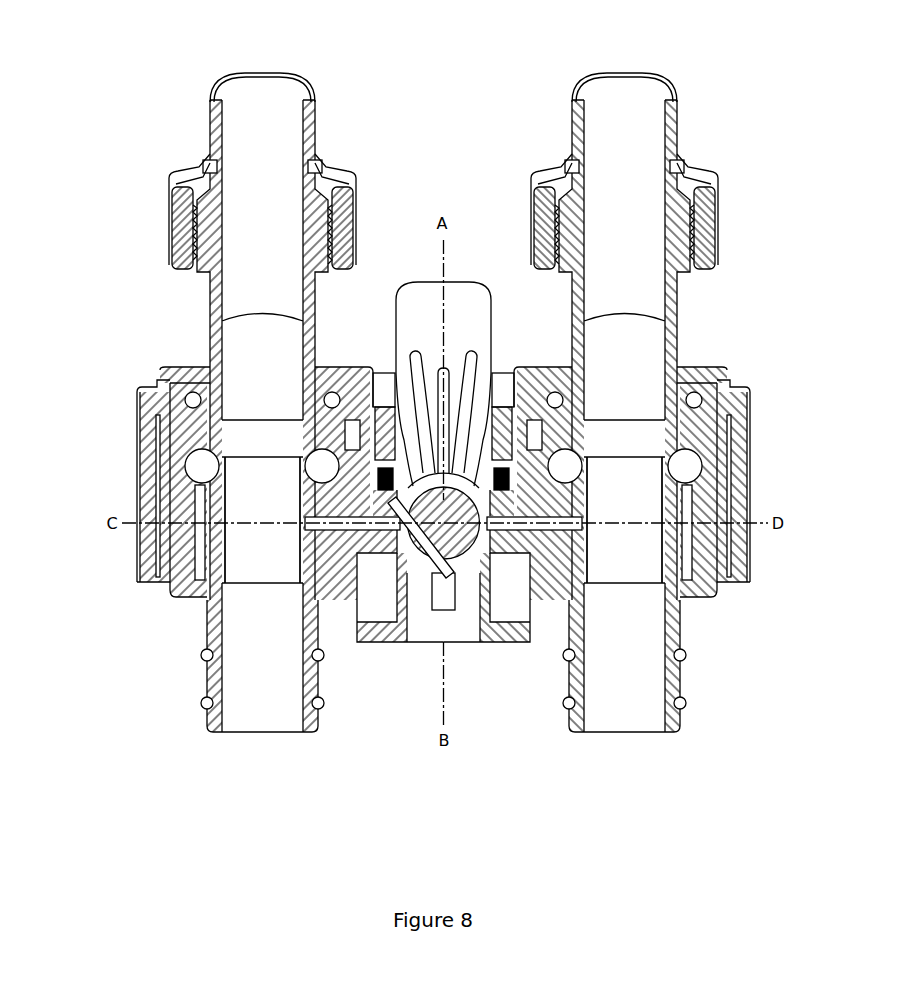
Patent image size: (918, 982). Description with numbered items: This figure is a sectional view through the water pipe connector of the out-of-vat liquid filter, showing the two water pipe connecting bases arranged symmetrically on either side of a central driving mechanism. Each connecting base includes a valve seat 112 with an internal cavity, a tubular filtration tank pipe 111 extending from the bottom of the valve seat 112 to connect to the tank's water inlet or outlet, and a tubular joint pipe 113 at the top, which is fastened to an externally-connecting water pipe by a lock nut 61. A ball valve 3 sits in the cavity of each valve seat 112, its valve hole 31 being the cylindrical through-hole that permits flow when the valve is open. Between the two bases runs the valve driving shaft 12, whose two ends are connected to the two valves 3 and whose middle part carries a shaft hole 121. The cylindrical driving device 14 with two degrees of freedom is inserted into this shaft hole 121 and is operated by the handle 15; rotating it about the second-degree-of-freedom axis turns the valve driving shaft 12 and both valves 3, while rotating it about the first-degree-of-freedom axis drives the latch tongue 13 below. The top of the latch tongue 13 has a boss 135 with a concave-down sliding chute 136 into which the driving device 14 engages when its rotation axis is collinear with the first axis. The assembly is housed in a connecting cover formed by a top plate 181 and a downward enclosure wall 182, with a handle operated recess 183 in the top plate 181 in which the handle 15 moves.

The valve 3 is at (217, 507).
The valve hole 31 is at (257, 539).
The valve driving shaft 12 is at (362, 600).
The latch tongue 13 is at (390, 575).
The driving device with two degrees of freedom 14 is at (402, 378).
The handle 15 is at (463, 322).
The lock nut 61 is at (185, 232).
The filtration tank pipe 111 is at (257, 689).
The valve seat 112 is at (182, 568).
The joint pipe 113 is at (260, 363).
The shaft hole 121 is at (443, 585).
The boss 135 is at (420, 573).
The sliding chute 136 is at (448, 592).
The top plate 181 is at (184, 371).
The enclosure wall 182 is at (148, 510).
The handle operated recess 183 is at (498, 370).